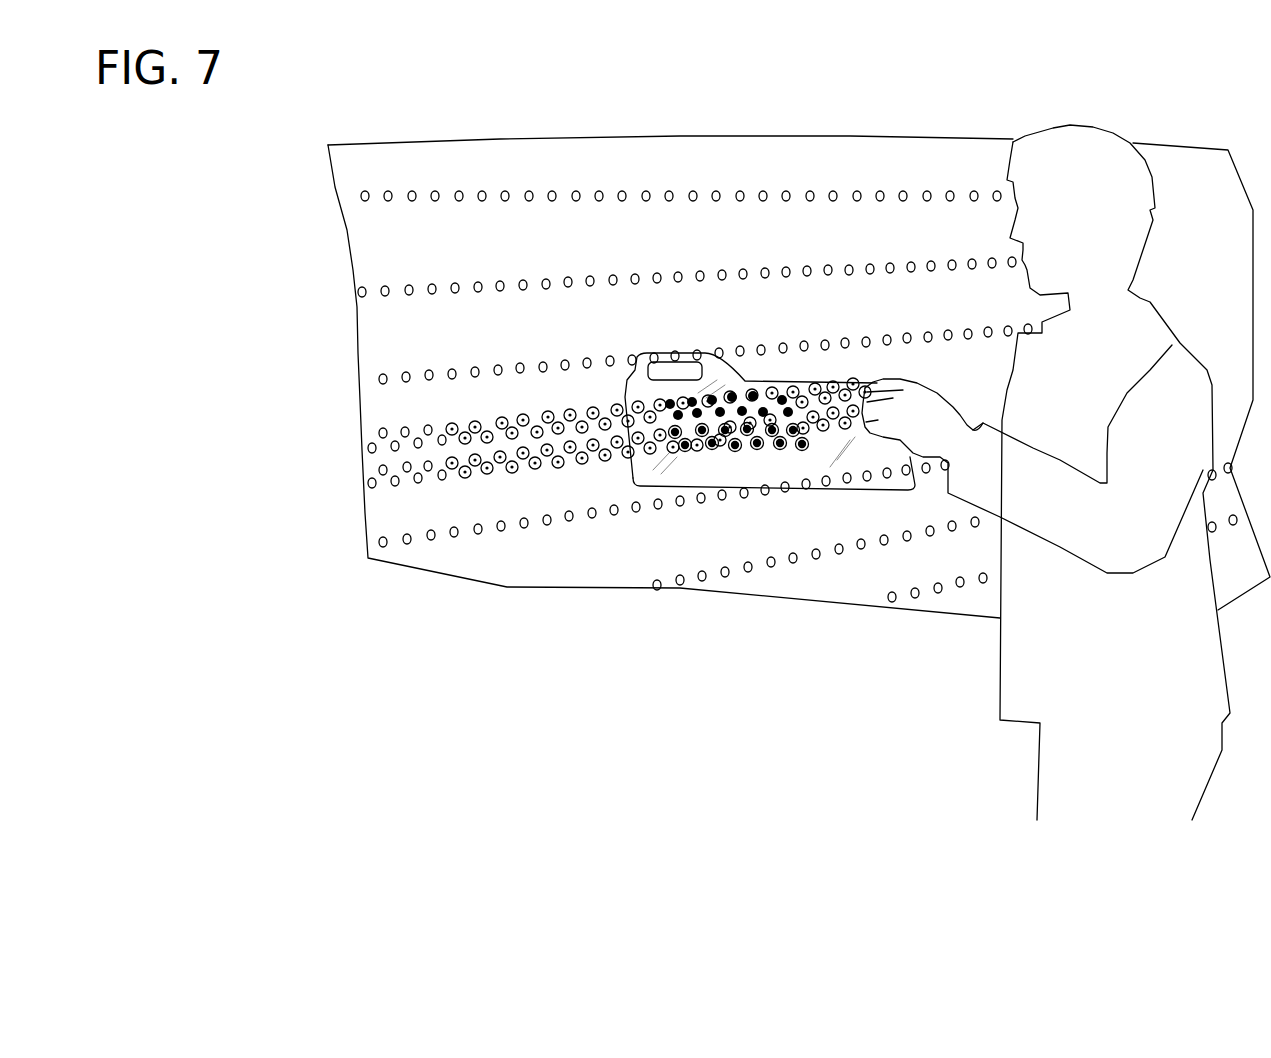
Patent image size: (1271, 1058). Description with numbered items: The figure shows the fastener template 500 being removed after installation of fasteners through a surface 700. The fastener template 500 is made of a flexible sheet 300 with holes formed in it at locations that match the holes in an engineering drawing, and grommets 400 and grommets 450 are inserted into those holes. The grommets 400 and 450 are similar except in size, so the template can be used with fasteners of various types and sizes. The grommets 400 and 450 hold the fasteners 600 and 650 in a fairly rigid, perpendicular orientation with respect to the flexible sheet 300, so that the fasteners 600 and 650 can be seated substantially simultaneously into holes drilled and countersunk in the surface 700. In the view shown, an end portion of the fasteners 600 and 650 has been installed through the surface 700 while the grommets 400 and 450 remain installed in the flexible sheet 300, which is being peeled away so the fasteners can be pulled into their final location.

The surface 700 is at (848, 152).
The fasteners 650 is at (523, 420).
The fasteners 600 is at (463, 478).
The flexible sheet 300 is at (907, 480).
The grommets 450 is at (738, 393).
The grommets 400 is at (712, 449).
The fastener template 500 is at (779, 452).